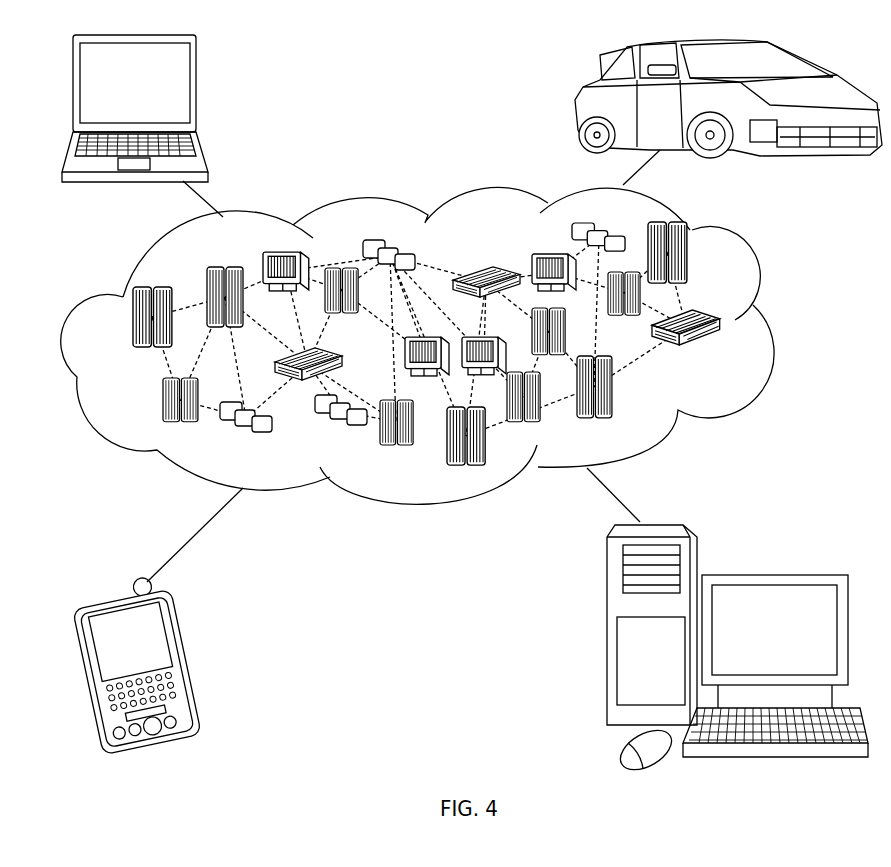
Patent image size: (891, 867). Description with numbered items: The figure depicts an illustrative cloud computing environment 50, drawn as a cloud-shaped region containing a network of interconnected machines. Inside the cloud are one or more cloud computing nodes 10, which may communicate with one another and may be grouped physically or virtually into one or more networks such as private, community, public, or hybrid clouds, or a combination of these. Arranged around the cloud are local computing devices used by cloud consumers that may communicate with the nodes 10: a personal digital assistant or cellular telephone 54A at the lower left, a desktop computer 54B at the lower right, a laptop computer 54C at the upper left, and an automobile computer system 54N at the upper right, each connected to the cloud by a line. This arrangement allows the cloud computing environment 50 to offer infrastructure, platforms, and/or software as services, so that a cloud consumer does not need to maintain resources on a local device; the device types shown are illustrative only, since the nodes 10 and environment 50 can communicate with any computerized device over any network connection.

The cloud computing environment 50 is at (770, 327).
The cloud computing nodes 10 is at (721, 350).
The personal digital assistant or cellular telephone 54A is at (187, 655).
The desktop computer 54B is at (772, 575).
The laptop computer 54C is at (196, 89).
The automobile computer system 54N is at (582, 102).